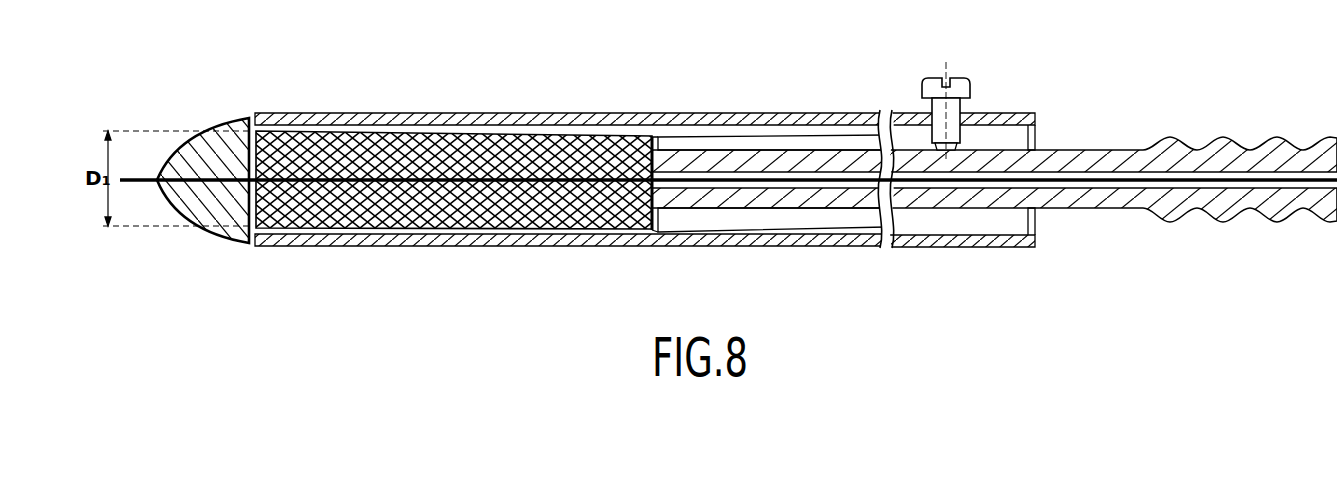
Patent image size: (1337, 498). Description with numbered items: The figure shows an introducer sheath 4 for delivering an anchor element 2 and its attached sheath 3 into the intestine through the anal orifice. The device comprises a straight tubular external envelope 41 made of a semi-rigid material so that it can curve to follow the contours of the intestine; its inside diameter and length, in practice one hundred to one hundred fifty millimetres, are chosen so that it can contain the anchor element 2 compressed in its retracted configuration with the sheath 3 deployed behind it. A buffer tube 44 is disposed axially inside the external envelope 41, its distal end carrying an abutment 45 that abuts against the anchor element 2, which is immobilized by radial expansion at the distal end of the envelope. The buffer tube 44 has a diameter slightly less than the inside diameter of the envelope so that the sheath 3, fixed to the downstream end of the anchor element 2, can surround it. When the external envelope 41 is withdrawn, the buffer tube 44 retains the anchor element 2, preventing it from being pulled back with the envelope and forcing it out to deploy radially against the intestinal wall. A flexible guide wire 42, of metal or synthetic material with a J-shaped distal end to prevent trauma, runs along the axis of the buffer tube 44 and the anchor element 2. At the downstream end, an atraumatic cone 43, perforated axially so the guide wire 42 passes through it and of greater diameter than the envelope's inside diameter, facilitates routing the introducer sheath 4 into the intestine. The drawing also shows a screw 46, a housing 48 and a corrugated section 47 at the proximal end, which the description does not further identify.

The anchor element 2 is at (455, 135).
The sheath 3 is at (818, 137).
The introducer sheath 4 is at (702, 88).
The external envelope 41 is at (675, 247).
The guide wire 42 is at (155, 179).
The atraumatic cone 43 is at (195, 203).
The buffer tube 44 is at (745, 160).
The abutment 45 is at (653, 136).
The locking screw 46 is at (930, 77).
The corrugated grip section 47 is at (1207, 222).
The housing 48 is at (1038, 210).